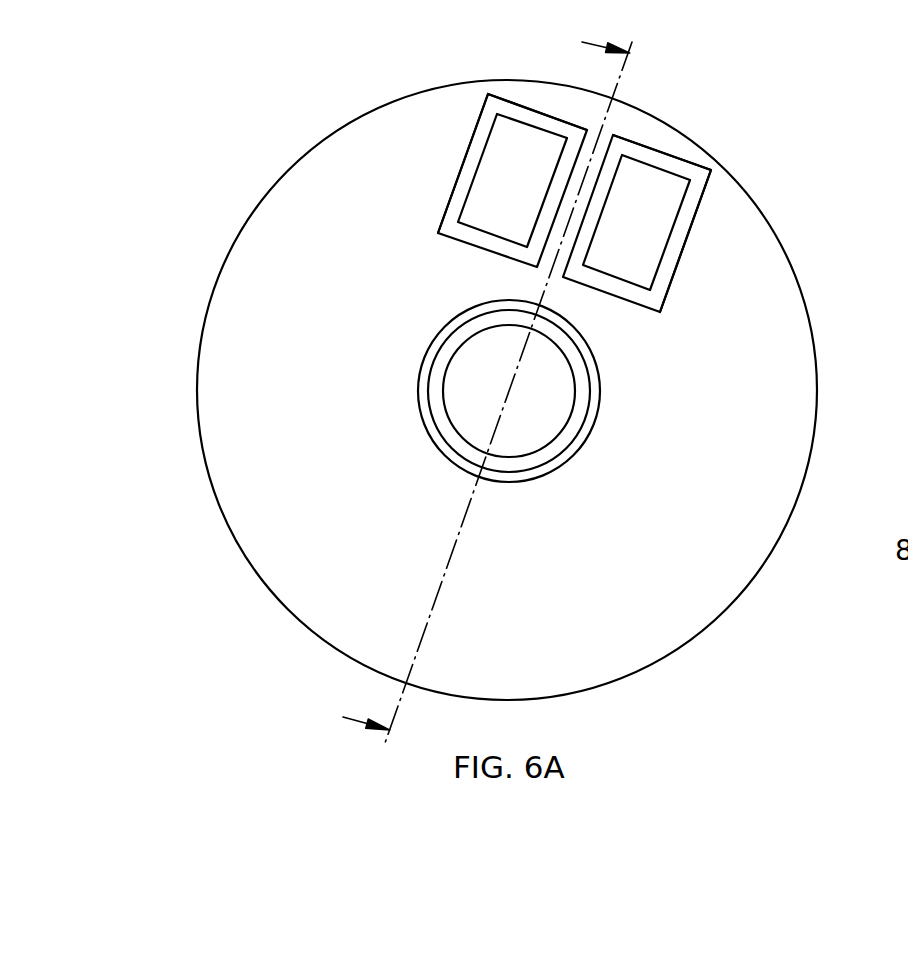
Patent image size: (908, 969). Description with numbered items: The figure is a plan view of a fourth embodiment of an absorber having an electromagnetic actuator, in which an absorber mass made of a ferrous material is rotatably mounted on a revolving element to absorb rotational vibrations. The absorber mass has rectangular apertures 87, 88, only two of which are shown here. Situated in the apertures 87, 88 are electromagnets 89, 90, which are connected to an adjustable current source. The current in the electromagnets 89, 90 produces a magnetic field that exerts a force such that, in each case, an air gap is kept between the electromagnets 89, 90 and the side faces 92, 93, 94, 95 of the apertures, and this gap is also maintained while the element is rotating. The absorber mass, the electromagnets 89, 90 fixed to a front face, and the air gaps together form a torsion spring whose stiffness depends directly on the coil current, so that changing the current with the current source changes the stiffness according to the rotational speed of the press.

The rectangular aperture 87 is at (675, 242).
The rectangular aperture 88 is at (457, 197).
The electromagnet 89 is at (503, 217).
The electromagnet 90 is at (632, 258).
The side face 92 is at (702, 200).
The side face 93 is at (612, 147).
The side face 94 is at (582, 128).
The side face 95 is at (475, 137).